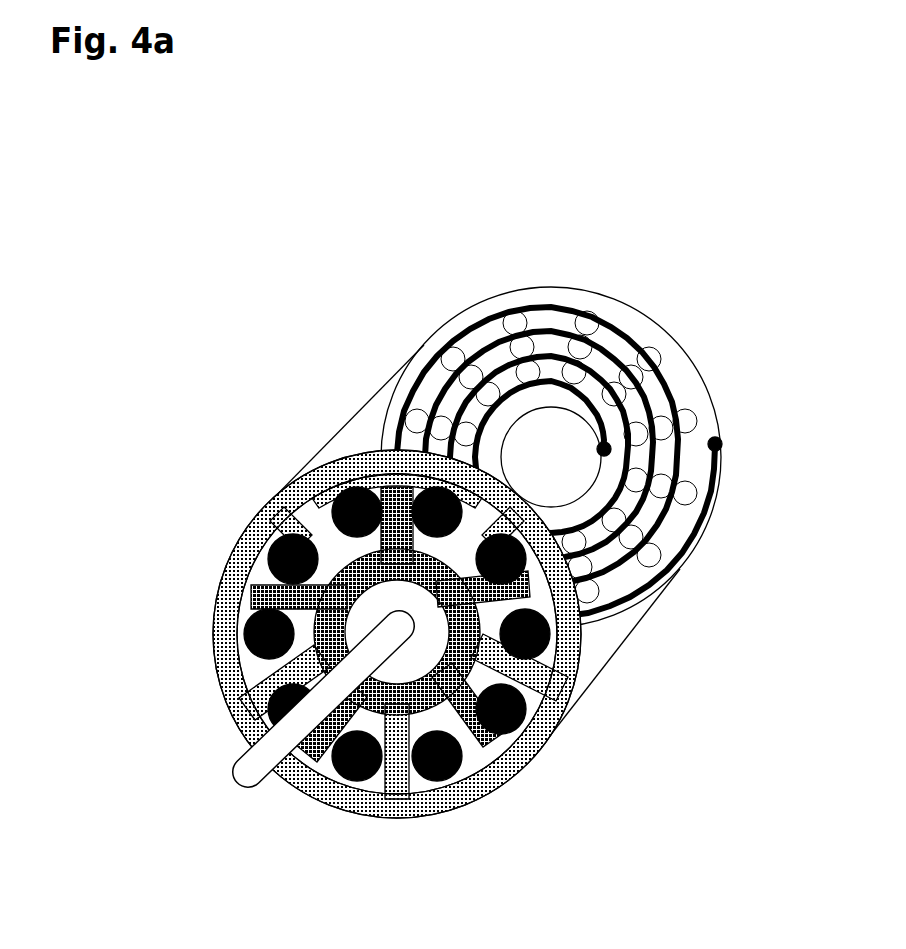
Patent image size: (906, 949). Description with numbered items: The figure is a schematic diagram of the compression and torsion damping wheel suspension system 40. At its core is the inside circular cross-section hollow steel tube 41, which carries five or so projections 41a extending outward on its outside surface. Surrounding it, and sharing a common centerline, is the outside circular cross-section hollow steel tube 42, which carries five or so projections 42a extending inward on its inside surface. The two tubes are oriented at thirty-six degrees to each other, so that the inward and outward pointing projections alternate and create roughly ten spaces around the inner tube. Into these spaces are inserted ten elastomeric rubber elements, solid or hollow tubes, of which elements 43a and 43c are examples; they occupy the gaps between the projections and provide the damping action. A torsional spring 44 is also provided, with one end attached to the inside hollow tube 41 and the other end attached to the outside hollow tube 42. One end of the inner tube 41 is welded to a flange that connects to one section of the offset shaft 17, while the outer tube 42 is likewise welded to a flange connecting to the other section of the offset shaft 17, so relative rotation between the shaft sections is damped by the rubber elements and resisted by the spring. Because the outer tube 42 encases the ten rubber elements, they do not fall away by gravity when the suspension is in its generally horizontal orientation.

The compression and torsion damping wheel suspension system 40 is at (660, 247).
The torsional spring 44 is at (598, 457).
The inside circular cross-section hollow steel tube 41 is at (332, 634).
The projections 41a is at (335, 613).
The outside circular cross-section hollow steel tube 42 is at (441, 645).
The projections 42a is at (412, 802).
The elastomeric rubber element 43a is at (393, 694).
The elastomeric rubber element 43c is at (484, 662).
The offset shaft 17 is at (279, 756).